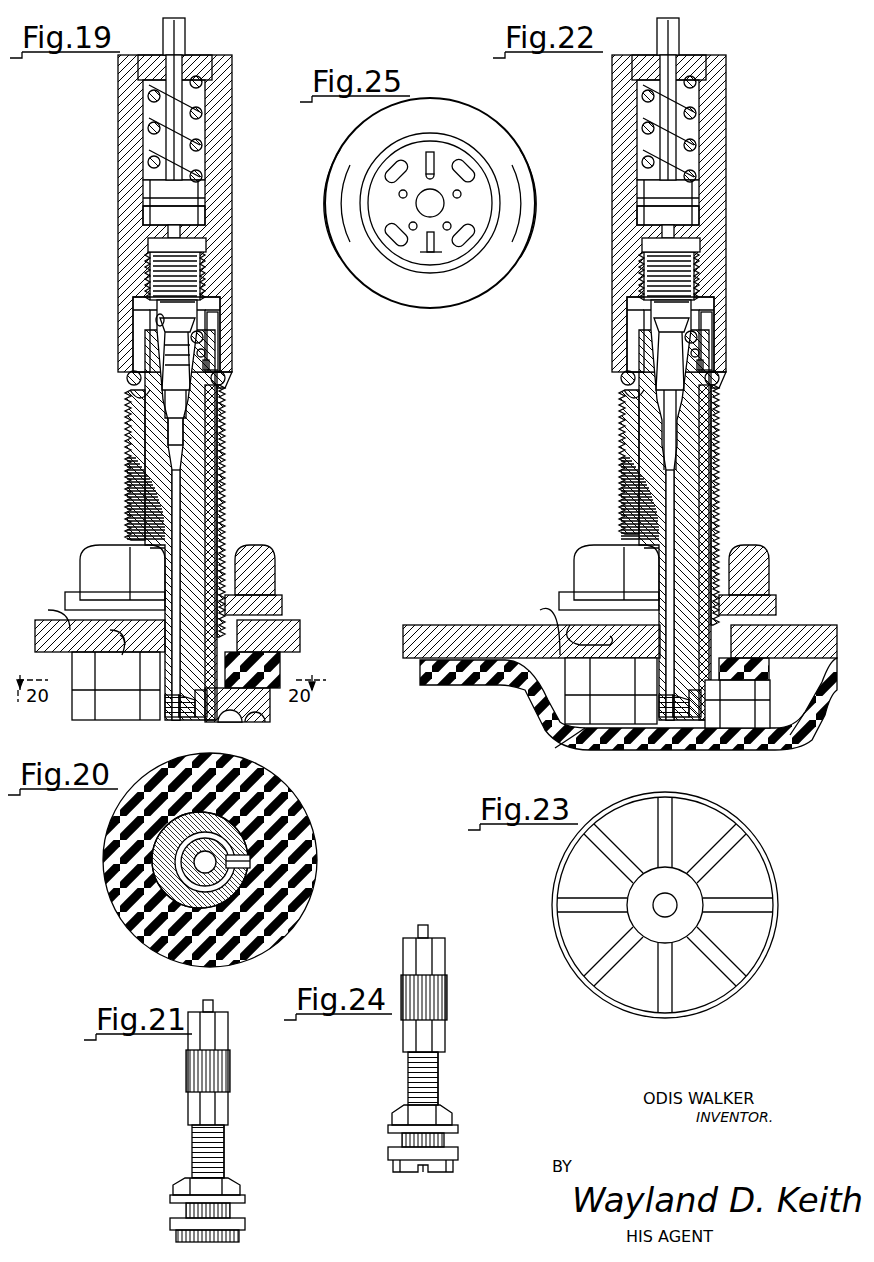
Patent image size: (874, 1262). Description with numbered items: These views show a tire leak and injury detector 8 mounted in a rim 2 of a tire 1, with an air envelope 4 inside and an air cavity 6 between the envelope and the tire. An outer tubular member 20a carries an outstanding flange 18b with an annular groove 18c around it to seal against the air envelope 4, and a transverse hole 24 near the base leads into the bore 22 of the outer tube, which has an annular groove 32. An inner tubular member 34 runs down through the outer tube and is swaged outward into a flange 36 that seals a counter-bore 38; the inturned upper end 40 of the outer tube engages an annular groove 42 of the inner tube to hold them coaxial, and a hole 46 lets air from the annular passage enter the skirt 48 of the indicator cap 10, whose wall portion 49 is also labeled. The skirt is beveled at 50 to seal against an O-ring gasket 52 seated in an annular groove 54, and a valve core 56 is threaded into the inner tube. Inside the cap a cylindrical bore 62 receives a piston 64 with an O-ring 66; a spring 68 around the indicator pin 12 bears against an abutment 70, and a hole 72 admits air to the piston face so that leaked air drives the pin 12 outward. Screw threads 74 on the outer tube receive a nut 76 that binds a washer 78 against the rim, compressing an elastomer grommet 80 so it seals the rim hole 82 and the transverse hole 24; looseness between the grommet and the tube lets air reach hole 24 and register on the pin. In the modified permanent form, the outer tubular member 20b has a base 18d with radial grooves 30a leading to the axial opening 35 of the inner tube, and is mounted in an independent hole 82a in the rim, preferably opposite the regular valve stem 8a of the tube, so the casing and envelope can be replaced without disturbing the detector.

In FIG. 25, the tire 1 is at (524, 178).
In FIG. 19, the rim 2 is at (298, 633).
In FIG. 25, the rim 2 is at (470, 158).
In FIG. 22, the rim 2 is at (477, 625).
In FIG. 22, the air envelope 4 is at (458, 680).
In FIG. 19, the air cavity 6 is at (60, 625).
In FIG. 22, the air cavity 6 is at (540, 655).
In FIG. 19, the tire leak and injury detector 8 is at (128, 483).
In FIG. 25, the tire leak and injury detector 8 is at (428, 245).
In FIG. 22, the tire leak and injury detector 8 is at (620, 464).
In FIG. 21, the tire leak and injury detector 8 is at (224, 1167).
In FIG. 24, the tire leak and injury detector 8 is at (440, 1090).
In FIG. 25, the regular valve stem 8a is at (426, 165).
In FIG. 19, the indicator cap 10 is at (232, 184).
In FIG. 22, the indicator cap 10 is at (690, 213).
In FIG. 21, the indicator cap 10 is at (226, 1070).
In FIG. 24, the indicator cap 10 is at (446, 1000).
In FIG. 19, the indicator pin 12 is at (180, 45).
In FIG. 22, the indicator pin 12 is at (711, 99).
In FIG. 21, the indicator pin 12 is at (213, 1003).
In FIG. 24, the indicator pin 12 is at (428, 930).
In FIG. 19, the outstanding flange 18b is at (268, 705).
In FIG. 21, the outstanding flange 18b is at (240, 1236).
In FIG. 19, the annular groove 18c is at (252, 718).
In FIG. 22, the base 18d is at (572, 712).
In FIG. 23, the base 18d is at (748, 955).
In FIG. 24, the base 18d is at (453, 1166).
In FIG. 19, the outer tubular member 20a is at (224, 512).
In FIG. 20, the outer tubular member 20a is at (268, 830).
In FIG. 21, the outer tubular member 20a is at (192, 1158).
In FIG. 22, the outer tubular member 20b is at (749, 505).
In FIG. 24, the outer tubular member 20b is at (408, 1095).
In FIG. 19, the bore 22 is at (210, 532).
In FIG. 20, the bore 22 is at (230, 868).
In FIG. 22, the bore 22 is at (737, 552).
In FIG. 19, the transverse hole 24 is at (275, 675).
In FIG. 20, the transverse hole 24 is at (250, 862).
In FIG. 22, the transverse hole 24 is at (760, 676).
In FIG. 22, the radial grooves 30a is at (795, 742).
In FIG. 23, the radial grooves 30a is at (580, 898).
In FIG. 24, the radial grooves 30a is at (447, 1172).
In FIG. 19, the annular groove 32 is at (168, 712).
In FIG. 20, the annular groove 32 is at (194, 866).
In FIG. 22, the annular groove 32 is at (662, 700).
In FIG. 19, the inner tubular member 34 is at (190, 435).
In FIG. 20, the inner tubular member 34 is at (160, 920).
In FIG. 22, the inner tubular member 34 is at (707, 510).
In FIG. 19, the axial opening 35 is at (182, 470).
In FIG. 22, the axial opening 35 is at (720, 575).
In FIG. 23, the axial opening 35 is at (668, 905).
In FIG. 19, the flange 36 is at (188, 715).
In FIG. 22, the flange 36 is at (682, 718).
In FIG. 19, the counter-bore 38 is at (204, 712).
In FIG. 22, the counter-bore 38 is at (700, 718).
In FIG. 19, the inturned upper end 40 is at (200, 340).
In FIG. 22, the inturned upper end 40 is at (710, 386).
In FIG. 19, the annular groove 42 is at (205, 355).
In FIG. 22, the annular groove 42 is at (729, 357).
In FIG. 19, the hole 46 is at (209, 367).
In FIG. 22, the hole 46 is at (732, 373).
In FIG. 19, the skirt 48 is at (220, 310).
In FIG. 22, the skirt 48 is at (697, 330).
In FIG. 19, the nut wall 49 is at (212, 326).
In FIG. 22, the nut wall 49 is at (734, 339).
In FIG. 19, the bevel 50 is at (127, 380).
In FIG. 22, the bevel 50 is at (602, 384).
In FIG. 19, the O-ring gasket 52 is at (225, 382).
In FIG. 22, the O-ring gasket 52 is at (737, 387).
In FIG. 19, the annular groove 54 is at (135, 400).
In FIG. 22, the annular groove 54 is at (607, 404).
In FIG. 19, the valve core 56 is at (160, 320).
In FIG. 19, the cylindrical bore 62 is at (202, 122).
In FIG. 22, the cylindrical bore 62 is at (704, 129).
In FIG. 19, the piston 64 is at (205, 220).
In FIG. 22, the piston 64 is at (701, 212).
In FIG. 19, the O-ring 66 is at (205, 196).
In FIG. 22, the O-ring 66 is at (701, 201).
In FIG. 19, the spring 68 is at (190, 150).
In FIG. 22, the spring 68 is at (703, 129).
In FIG. 19, the abutment 70 is at (195, 67).
In FIG. 22, the abutment 70 is at (698, 63).
In FIG. 19, the hole 72 is at (186, 242).
In FIG. 22, the hole 72 is at (703, 238).
In FIG. 19, the screw threads 74 is at (224, 495).
In FIG. 22, the screw threads 74 is at (743, 433).
In FIG. 19, the nut 76 is at (263, 560).
In FIG. 22, the nut 76 is at (687, 566).
In FIG. 21, the nut 76 is at (240, 1188).
In FIG. 24, the nut 76 is at (452, 1120).
In FIG. 19, the washer 78 is at (278, 604).
In FIG. 22, the washer 78 is at (687, 599).
In FIG. 21, the washer 78 is at (245, 1200).
In FIG. 24, the washer 78 is at (456, 1132).
In FIG. 19, the elastomer grommet 80 is at (80, 690).
In FIG. 20, the elastomer grommet 80 is at (292, 810).
In FIG. 22, the elastomer grommet 80 is at (600, 700).
In FIG. 21, the elastomer grommet 80 is at (170, 1226).
In FIG. 24, the elastomer grommet 80 is at (388, 1154).
In FIG. 19, the hole in rim 82 is at (118, 650).
In FIG. 22, the independent hole 82a is at (570, 630).